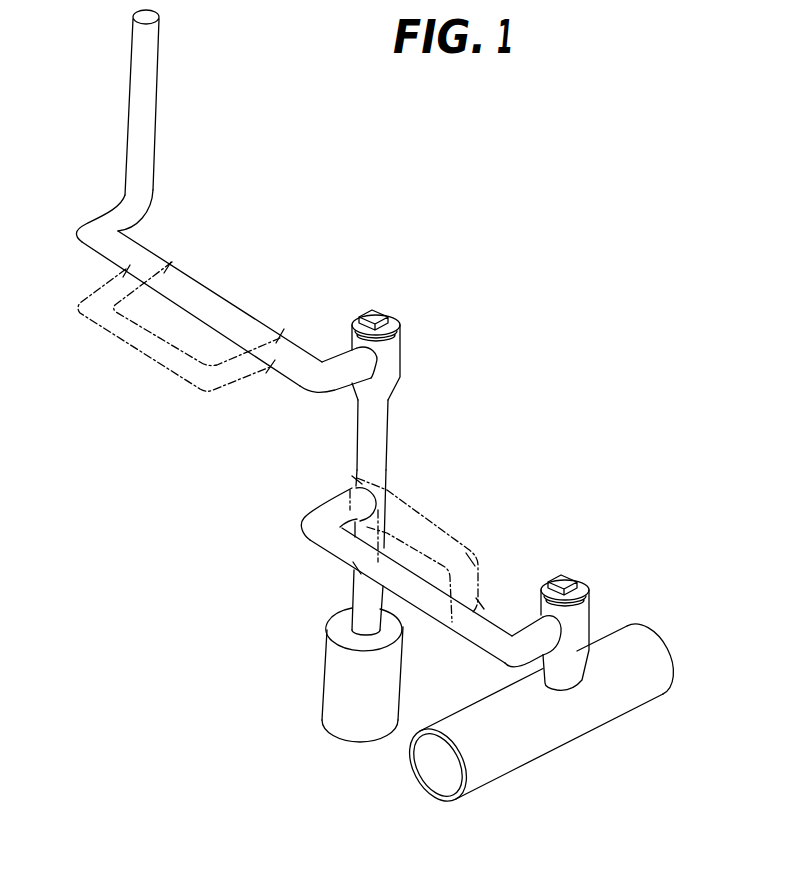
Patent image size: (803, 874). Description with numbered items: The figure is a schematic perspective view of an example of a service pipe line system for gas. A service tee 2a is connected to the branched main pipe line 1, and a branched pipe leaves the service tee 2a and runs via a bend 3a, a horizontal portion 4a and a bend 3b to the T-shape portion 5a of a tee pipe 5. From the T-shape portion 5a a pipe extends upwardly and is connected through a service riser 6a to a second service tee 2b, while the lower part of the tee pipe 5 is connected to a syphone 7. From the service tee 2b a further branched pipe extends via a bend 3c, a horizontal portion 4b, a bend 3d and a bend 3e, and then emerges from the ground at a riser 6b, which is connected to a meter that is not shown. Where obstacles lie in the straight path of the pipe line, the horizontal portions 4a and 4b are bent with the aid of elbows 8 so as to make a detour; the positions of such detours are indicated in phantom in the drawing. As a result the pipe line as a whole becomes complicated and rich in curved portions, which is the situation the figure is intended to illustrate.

The branched main pipe line 1 is at (548, 740).
The service tee 2a is at (582, 612).
The service tee 2b is at (397, 350).
The bend 3a is at (507, 648).
The bend 3b is at (304, 527).
The bend 3c is at (321, 386).
The bend 3d is at (80, 232).
The bend 3e is at (138, 212).
The horizontal portion 4a is at (416, 606).
The horizontal portion 4b is at (220, 299).
The tee pipe 5 is at (390, 458).
The T-shape portion 5a is at (390, 497).
The service riser 6a is at (386, 426).
The riser 6b is at (154, 88).
The syphone 7 is at (325, 682).
The elbows 8 is at (478, 603).